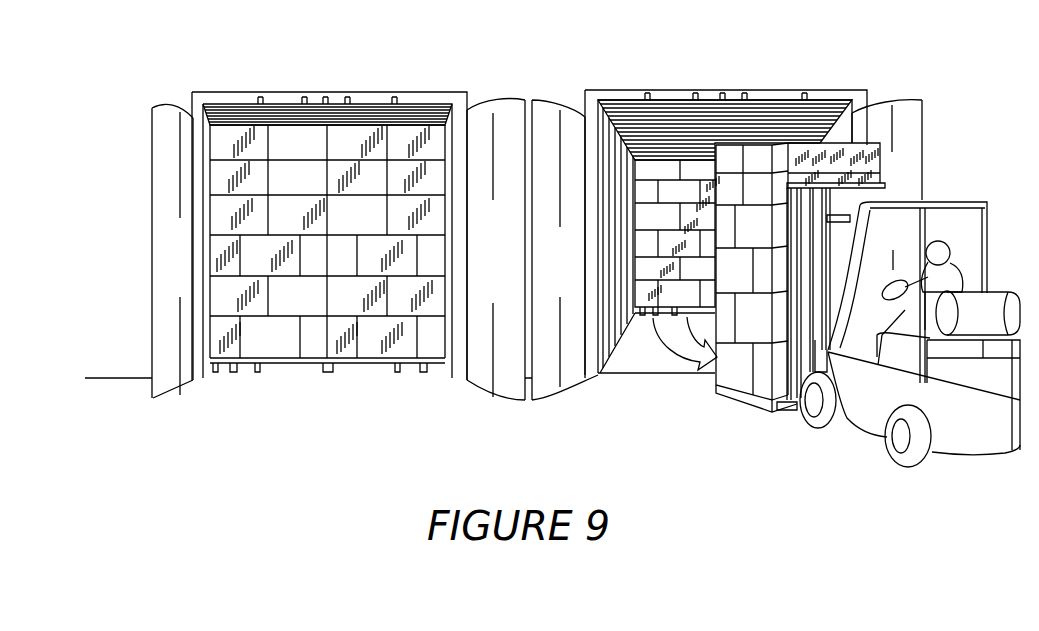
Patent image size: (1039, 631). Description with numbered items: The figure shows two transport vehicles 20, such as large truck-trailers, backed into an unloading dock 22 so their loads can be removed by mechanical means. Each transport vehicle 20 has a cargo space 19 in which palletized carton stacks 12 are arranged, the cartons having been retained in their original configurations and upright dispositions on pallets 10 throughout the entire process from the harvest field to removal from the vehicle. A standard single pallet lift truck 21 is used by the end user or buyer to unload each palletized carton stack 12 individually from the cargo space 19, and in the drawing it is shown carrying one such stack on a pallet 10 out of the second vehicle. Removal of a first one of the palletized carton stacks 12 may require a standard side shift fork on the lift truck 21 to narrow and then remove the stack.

The pallet 10 is at (762, 403).
The palletized carton stack 12 is at (372, 366).
The cargo space 19 is at (775, 123).
The transport vehicle 20 is at (412, 85).
The lift truck 21 is at (995, 208).
The unloading dock 22 is at (213, 462).